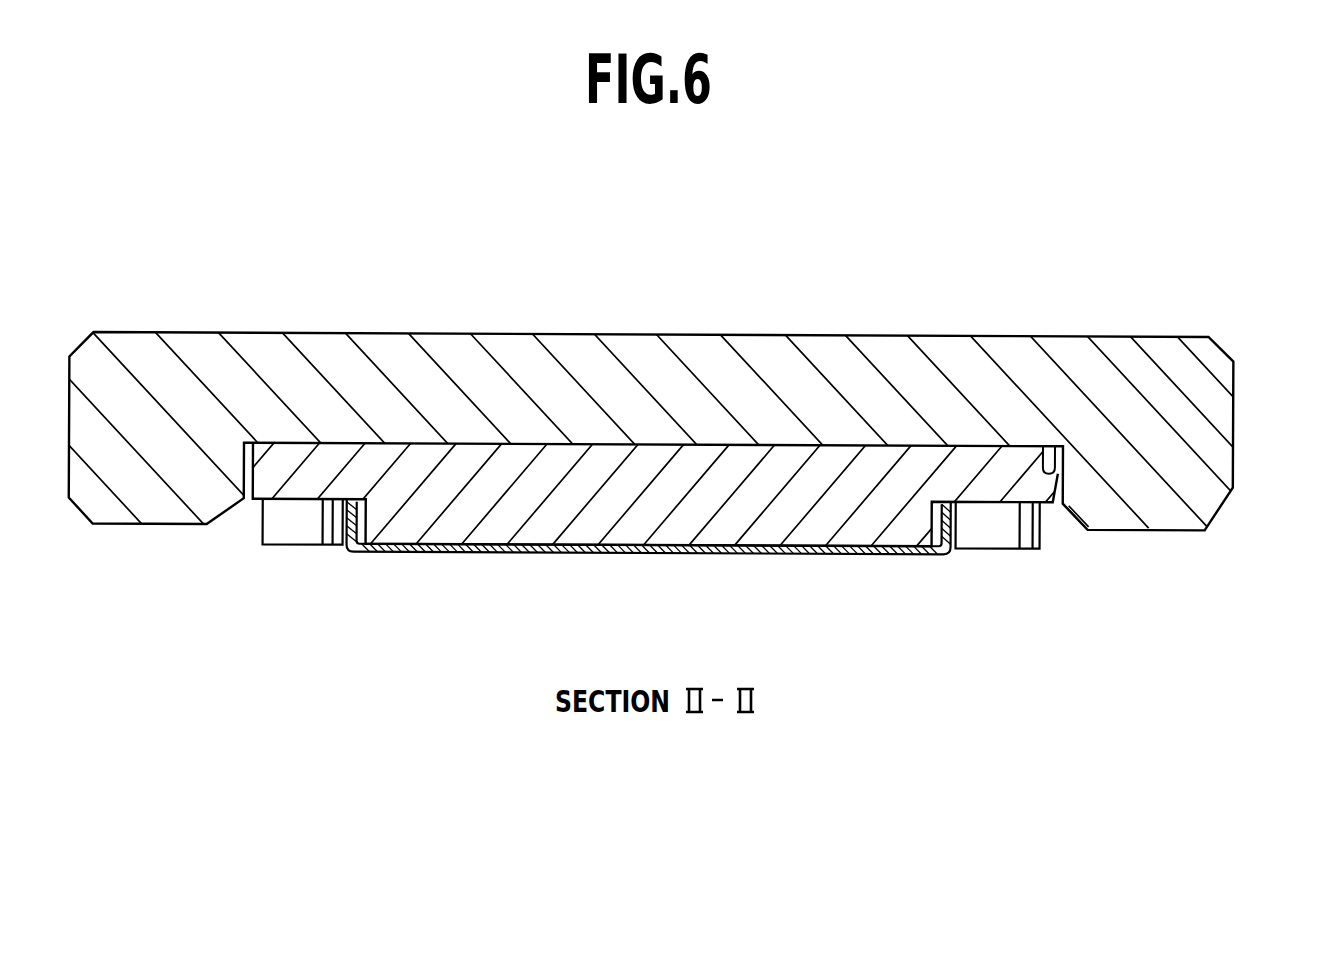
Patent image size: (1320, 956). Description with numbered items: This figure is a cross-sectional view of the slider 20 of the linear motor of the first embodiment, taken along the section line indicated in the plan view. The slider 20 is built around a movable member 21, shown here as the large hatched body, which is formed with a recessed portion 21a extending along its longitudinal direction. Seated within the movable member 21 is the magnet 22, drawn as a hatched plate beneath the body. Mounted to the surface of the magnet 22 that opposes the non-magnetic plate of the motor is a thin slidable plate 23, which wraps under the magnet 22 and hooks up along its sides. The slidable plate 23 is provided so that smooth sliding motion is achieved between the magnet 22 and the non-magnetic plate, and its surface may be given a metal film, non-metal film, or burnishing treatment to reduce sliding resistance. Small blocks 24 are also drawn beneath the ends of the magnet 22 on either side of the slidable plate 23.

The slider 20 is at (1217, 253).
The movable member 21 is at (1188, 442).
The recessed portion 21a is at (1044, 452).
The magnet 22 is at (1030, 485).
The slidable plate 23 is at (942, 557).
The spacer block 24 is at (298, 530).